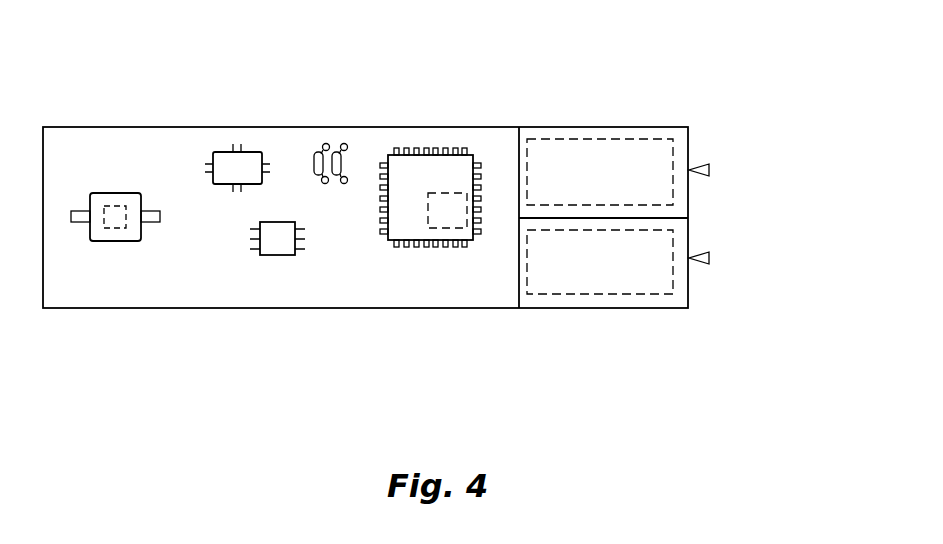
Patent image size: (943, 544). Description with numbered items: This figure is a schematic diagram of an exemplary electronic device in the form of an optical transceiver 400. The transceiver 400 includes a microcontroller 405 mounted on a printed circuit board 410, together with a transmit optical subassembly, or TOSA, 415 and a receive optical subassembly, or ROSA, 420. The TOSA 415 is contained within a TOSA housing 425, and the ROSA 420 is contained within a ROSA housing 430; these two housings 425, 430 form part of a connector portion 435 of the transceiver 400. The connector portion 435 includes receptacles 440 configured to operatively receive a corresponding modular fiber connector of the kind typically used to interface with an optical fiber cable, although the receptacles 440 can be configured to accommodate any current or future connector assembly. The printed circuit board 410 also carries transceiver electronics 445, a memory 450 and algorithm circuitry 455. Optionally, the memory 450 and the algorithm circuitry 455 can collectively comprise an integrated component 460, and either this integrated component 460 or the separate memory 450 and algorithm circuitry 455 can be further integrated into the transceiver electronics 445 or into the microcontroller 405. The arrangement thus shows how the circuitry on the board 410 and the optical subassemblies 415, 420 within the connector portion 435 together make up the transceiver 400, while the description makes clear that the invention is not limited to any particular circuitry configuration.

The optical transceiver 400 is at (506, 72).
The microcontroller 405 is at (400, 220).
The printed circuit board 410 is at (366, 142).
The transmit optical subassembly 415 is at (658, 155).
The receive optical subassembly 420 is at (597, 275).
The TOSA housing 425 is at (622, 128).
The ROSA housing 430 is at (550, 300).
The connector portion 435 is at (750, 217).
The receptacles 440 is at (690, 170).
The transceiver electronics 445 is at (317, 150).
The memory 450 is at (221, 156).
The algorithm circuitry 455 is at (272, 252).
The integrated component 460 is at (104, 228).